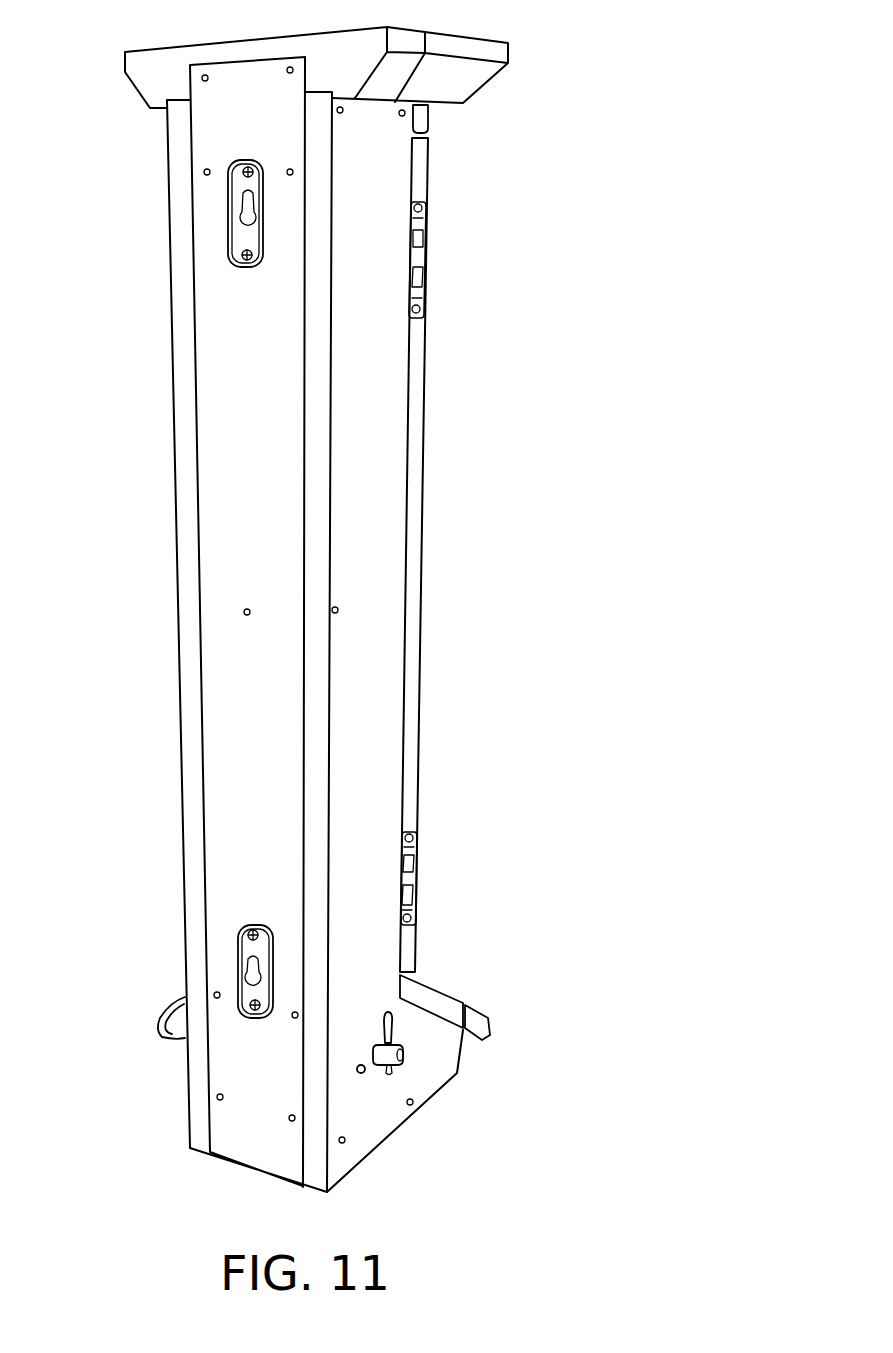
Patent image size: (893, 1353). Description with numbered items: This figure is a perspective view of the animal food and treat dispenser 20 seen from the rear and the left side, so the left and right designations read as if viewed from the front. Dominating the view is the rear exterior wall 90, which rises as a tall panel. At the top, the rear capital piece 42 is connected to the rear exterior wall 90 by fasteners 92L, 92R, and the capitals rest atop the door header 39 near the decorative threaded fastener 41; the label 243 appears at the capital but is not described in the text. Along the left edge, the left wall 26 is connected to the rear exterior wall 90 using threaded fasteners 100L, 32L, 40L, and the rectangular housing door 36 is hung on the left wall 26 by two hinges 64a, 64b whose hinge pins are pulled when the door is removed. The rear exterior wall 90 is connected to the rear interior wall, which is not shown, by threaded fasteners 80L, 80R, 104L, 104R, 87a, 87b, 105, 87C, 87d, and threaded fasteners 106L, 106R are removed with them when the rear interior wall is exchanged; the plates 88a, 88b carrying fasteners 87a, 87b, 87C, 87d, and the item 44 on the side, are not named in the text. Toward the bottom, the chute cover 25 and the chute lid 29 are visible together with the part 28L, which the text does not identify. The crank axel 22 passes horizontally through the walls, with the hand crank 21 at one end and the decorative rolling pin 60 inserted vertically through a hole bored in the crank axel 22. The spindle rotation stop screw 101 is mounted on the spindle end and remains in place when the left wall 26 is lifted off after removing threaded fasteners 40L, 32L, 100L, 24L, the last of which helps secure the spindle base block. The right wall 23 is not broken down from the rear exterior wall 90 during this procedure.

The animal food and treat dispenser 20 is at (170, 342).
The hand crank 21 is at (172, 1012).
The crank axel 22 is at (403, 1058).
The right wall 23 is at (176, 483).
The threaded fastener 24L is at (413, 1103).
The chute cover 25 is at (490, 1030).
The left wall 26 is at (388, 395).
The bottom bracket 28L is at (463, 1003).
The chute lid 29 is at (430, 985).
The threaded fastener 32L is at (338, 609).
The rectangular housing door 36 is at (425, 480).
The door header 39 is at (420, 126).
The threaded fastener 40L is at (341, 112).
The threaded fastener 41 is at (430, 118).
The rear capital piece 42 is at (125, 73).
The side wall 44 is at (210, 388).
The rolling pin 60 is at (383, 1013).
The hinge 64a is at (417, 878).
The hinge 64b is at (425, 285).
The threaded fastener 80L is at (290, 1120).
The threaded fastener 80R is at (218, 1099).
The threaded fastener 87a is at (256, 1011).
The threaded fastener 87b is at (255, 930).
The threaded fastener 87C is at (248, 261).
The threaded fastener 87d is at (248, 166).
The lower keyhole bracket 88a is at (250, 925).
The upper keyhole bracket 88b is at (235, 268).
The rear exterior wall 90 is at (245, 742).
The fastener 92L is at (292, 69).
The fastener 92R is at (204, 81).
The threaded fastener 100L is at (344, 1142).
The spindle rotation stop screw 101 is at (358, 1073).
The threaded fastener 104L is at (297, 1013).
The threaded fastener 104R is at (215, 994).
The threaded fastener 105 is at (244, 614).
The threaded fastener 106L is at (293, 172).
The threaded fastener 106R is at (204, 173).
The cap end face 243 is at (507, 76).